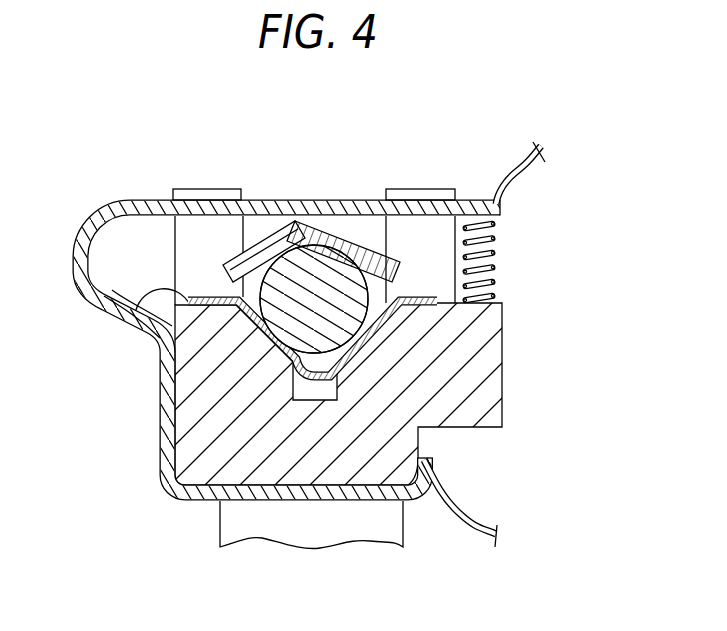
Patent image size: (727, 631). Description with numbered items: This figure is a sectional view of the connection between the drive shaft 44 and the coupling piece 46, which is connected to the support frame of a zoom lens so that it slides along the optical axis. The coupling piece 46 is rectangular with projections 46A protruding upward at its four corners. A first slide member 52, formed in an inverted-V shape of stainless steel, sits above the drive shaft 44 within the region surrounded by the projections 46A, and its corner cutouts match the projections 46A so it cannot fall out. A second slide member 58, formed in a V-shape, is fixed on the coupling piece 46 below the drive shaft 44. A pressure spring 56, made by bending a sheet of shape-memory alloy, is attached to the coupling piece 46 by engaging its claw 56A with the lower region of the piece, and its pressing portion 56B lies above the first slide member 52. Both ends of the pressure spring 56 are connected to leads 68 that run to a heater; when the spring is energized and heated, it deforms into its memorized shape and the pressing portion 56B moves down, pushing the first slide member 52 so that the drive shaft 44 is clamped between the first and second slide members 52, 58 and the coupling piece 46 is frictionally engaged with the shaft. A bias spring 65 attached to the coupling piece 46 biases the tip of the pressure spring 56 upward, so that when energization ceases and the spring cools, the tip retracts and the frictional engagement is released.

The drive shaft 44 is at (302, 258).
The coupling piece 46 is at (199, 401).
The projections 46A is at (212, 189).
The first slide member 52 is at (351, 232).
The pressure spring 56 is at (119, 199).
The claw 56A is at (434, 461).
The pressing portion 56B is at (322, 200).
The second slide member 58 is at (132, 318).
The bias spring 65 is at (498, 250).
The leads 68 is at (499, 200).